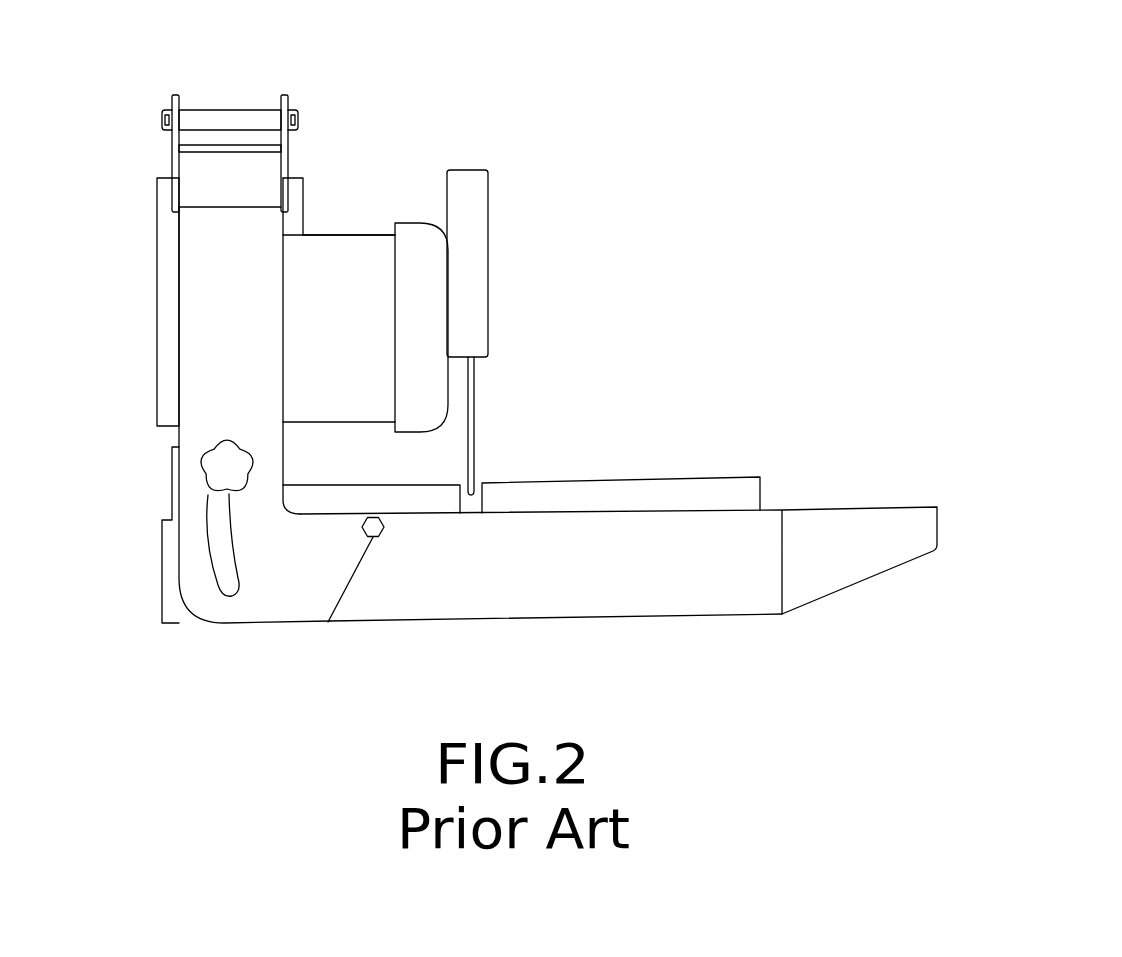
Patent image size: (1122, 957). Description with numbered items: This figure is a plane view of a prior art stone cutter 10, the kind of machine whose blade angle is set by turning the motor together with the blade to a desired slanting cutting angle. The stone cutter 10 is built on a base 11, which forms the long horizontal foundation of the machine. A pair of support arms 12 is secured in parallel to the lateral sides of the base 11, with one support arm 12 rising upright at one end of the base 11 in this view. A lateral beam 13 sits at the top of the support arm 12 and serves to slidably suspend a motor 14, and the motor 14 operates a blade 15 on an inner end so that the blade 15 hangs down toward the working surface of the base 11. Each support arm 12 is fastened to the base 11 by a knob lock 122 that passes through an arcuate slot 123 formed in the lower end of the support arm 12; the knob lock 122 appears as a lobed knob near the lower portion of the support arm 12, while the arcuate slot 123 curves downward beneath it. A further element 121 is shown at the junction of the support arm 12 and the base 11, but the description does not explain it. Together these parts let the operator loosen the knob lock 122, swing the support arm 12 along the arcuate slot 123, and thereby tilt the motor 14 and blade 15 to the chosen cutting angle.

The stone cutter 10 is at (963, 328).
The base 11 is at (666, 570).
The support arm 12 is at (200, 337).
The lateral beam 13 is at (203, 186).
The motor 14 is at (352, 247).
The blade 15 is at (475, 413).
The pivot nut 121 is at (373, 537).
The knob lock 122 is at (215, 476).
The arcuate slot 123 is at (215, 538).